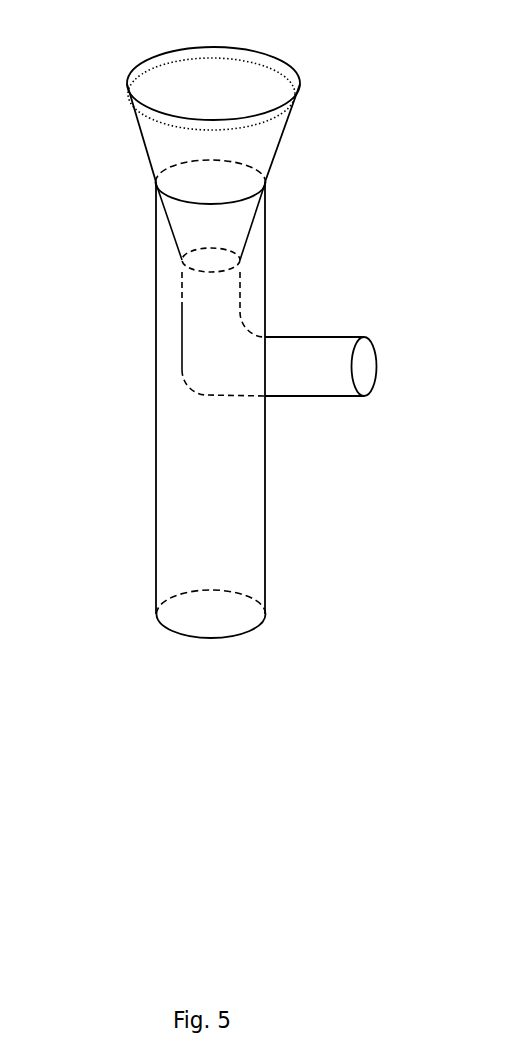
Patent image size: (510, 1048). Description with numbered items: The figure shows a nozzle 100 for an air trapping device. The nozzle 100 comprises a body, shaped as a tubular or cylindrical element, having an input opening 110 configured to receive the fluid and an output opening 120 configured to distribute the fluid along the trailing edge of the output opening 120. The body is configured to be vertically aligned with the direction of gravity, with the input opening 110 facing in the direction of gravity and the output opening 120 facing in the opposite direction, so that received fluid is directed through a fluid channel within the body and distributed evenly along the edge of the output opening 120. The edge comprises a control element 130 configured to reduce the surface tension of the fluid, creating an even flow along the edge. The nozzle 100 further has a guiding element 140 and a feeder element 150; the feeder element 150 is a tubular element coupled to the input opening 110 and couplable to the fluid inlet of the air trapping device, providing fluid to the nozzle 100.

The nozzle 100 is at (168, 163).
The input opening 110 is at (210, 259).
The output opening 120 is at (205, 82).
The control element 130 is at (128, 82).
The guiding element 140 is at (207, 553).
The feeder element 150 is at (311, 373).